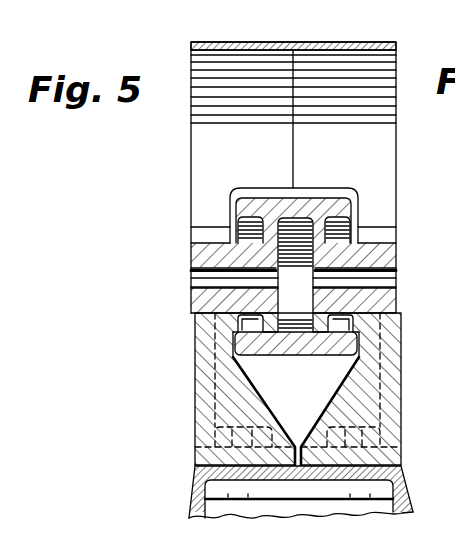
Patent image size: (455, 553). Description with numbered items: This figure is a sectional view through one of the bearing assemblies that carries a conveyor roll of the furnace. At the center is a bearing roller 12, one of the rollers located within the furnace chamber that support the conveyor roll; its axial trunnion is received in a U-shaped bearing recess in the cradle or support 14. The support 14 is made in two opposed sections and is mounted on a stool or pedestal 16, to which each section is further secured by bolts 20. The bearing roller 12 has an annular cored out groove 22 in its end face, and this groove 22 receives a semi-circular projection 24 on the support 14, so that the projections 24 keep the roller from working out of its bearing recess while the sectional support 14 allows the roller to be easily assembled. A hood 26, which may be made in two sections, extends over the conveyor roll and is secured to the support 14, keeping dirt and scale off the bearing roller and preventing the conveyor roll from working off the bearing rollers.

The hood 26 is at (190, 45).
The bearing roller 12 is at (313, 203).
The annular cored out groove 22 is at (240, 222).
The cradle or support 14 is at (393, 343).
The semi-circular projection 24 is at (245, 332).
The bolt 20 is at (195, 421).
The stool or pedestal 16 is at (192, 502).